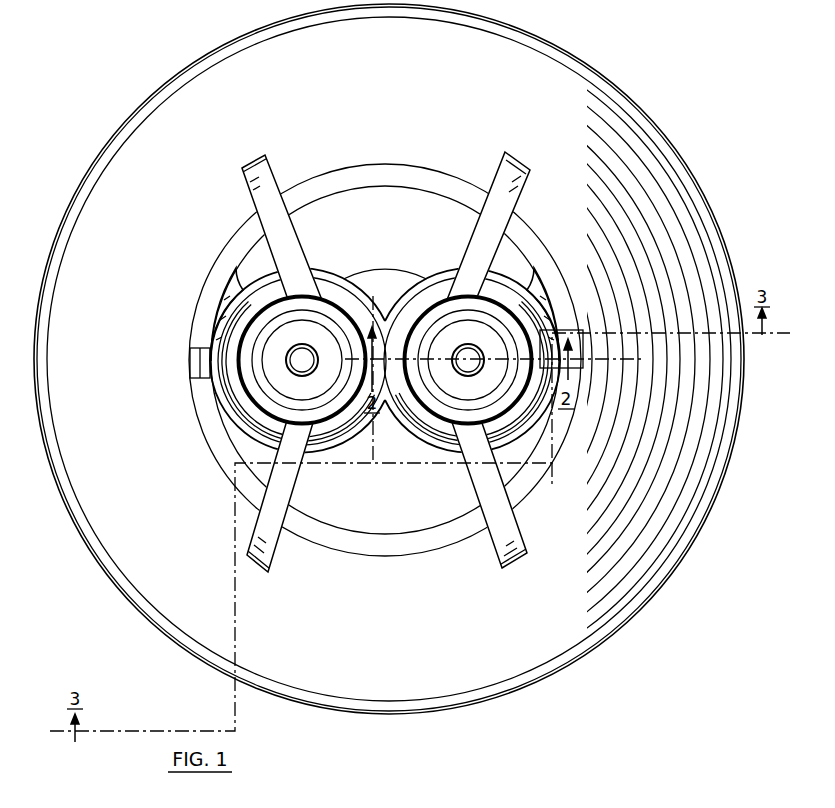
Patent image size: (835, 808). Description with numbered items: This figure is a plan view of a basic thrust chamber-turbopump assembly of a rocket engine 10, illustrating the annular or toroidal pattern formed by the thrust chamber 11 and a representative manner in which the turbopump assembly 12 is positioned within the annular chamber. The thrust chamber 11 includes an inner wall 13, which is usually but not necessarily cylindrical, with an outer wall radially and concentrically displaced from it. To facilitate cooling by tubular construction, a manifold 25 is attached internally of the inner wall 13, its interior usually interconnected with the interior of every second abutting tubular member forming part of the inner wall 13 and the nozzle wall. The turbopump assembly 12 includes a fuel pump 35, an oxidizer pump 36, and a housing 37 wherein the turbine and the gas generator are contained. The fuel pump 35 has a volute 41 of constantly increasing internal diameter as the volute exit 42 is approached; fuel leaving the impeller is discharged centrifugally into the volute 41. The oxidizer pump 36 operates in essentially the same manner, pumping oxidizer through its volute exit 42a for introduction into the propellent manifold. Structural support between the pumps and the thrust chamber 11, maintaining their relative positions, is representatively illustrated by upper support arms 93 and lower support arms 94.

The rocket engine 10 is at (600, 58).
The thrust chamber 11 is at (674, 131).
The turbopump assembly 12 is at (385, 262).
The inner wall 13 is at (306, 208).
The manifold 25 is at (432, 181).
The fuel pump 35 is at (458, 398).
The oxidizer pump 36 is at (293, 398).
The housing 37 is at (430, 263).
The volute 41 is at (447, 428).
The volute exit 42 is at (543, 298).
The volute exit 42a is at (233, 283).
The upper support arms 93 is at (258, 205).
The lower support arms 94 is at (200, 358).